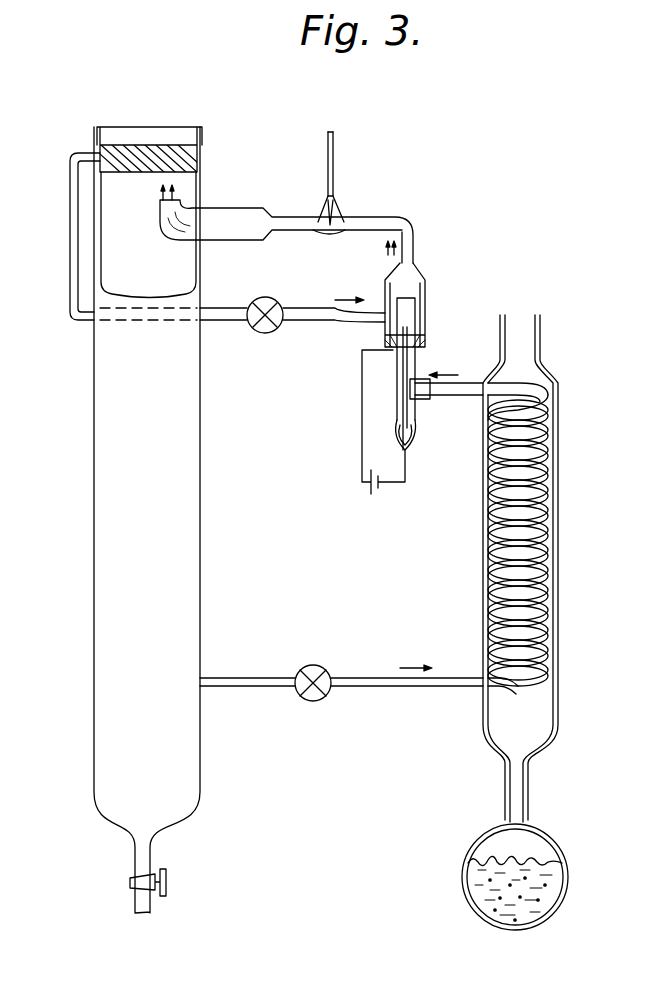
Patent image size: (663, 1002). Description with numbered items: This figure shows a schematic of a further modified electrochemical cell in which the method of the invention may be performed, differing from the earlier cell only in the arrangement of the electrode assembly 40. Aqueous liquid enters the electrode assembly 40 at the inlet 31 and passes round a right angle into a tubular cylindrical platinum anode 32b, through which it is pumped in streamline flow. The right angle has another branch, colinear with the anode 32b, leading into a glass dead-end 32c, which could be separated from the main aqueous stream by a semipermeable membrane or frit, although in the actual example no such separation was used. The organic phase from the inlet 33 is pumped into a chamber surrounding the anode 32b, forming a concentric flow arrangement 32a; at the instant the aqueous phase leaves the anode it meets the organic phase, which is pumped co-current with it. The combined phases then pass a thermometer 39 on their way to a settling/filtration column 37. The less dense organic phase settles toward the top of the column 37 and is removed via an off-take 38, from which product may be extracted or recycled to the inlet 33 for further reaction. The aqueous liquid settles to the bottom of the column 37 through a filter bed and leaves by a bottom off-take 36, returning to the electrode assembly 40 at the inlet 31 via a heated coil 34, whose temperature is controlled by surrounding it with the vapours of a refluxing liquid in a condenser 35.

The aqueous liquid inlet 31 is at (465, 385).
The concentric flow arrangement 32a is at (385, 287).
The tubular cylindrical platinum anode 32b is at (420, 306).
The glass dead-end 32c is at (416, 428).
The inlet 33 is at (352, 325).
The heated coil 34 is at (492, 582).
The condenser 35 is at (560, 478).
The bottom off-take 36 is at (232, 680).
The settling/filtration column 37 is at (115, 372).
The off-take 38 is at (83, 155).
The thermometer 39 is at (333, 147).
The electrode assembly 40 is at (370, 397).